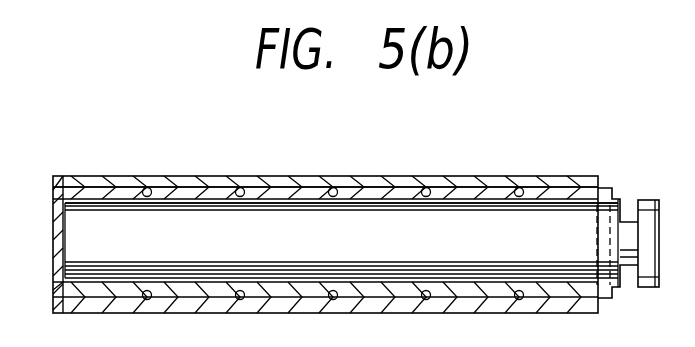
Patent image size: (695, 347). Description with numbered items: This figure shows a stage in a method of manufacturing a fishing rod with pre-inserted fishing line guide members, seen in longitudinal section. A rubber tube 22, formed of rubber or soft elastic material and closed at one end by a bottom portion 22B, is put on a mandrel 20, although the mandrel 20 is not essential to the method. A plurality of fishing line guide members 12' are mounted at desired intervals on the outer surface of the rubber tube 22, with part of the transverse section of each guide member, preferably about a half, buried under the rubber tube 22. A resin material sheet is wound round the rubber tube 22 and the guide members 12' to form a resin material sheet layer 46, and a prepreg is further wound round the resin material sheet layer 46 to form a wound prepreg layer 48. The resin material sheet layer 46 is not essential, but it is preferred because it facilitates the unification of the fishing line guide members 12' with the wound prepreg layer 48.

The mandrel 20 is at (399, 258).
The rubber tube 22 is at (397, 195).
The bottom portion 22B is at (53, 213).
The fishing line guide members 12' is at (333, 204).
The resin material sheet layer 46 is at (288, 188).
The wound prepreg layer 48 is at (350, 180).